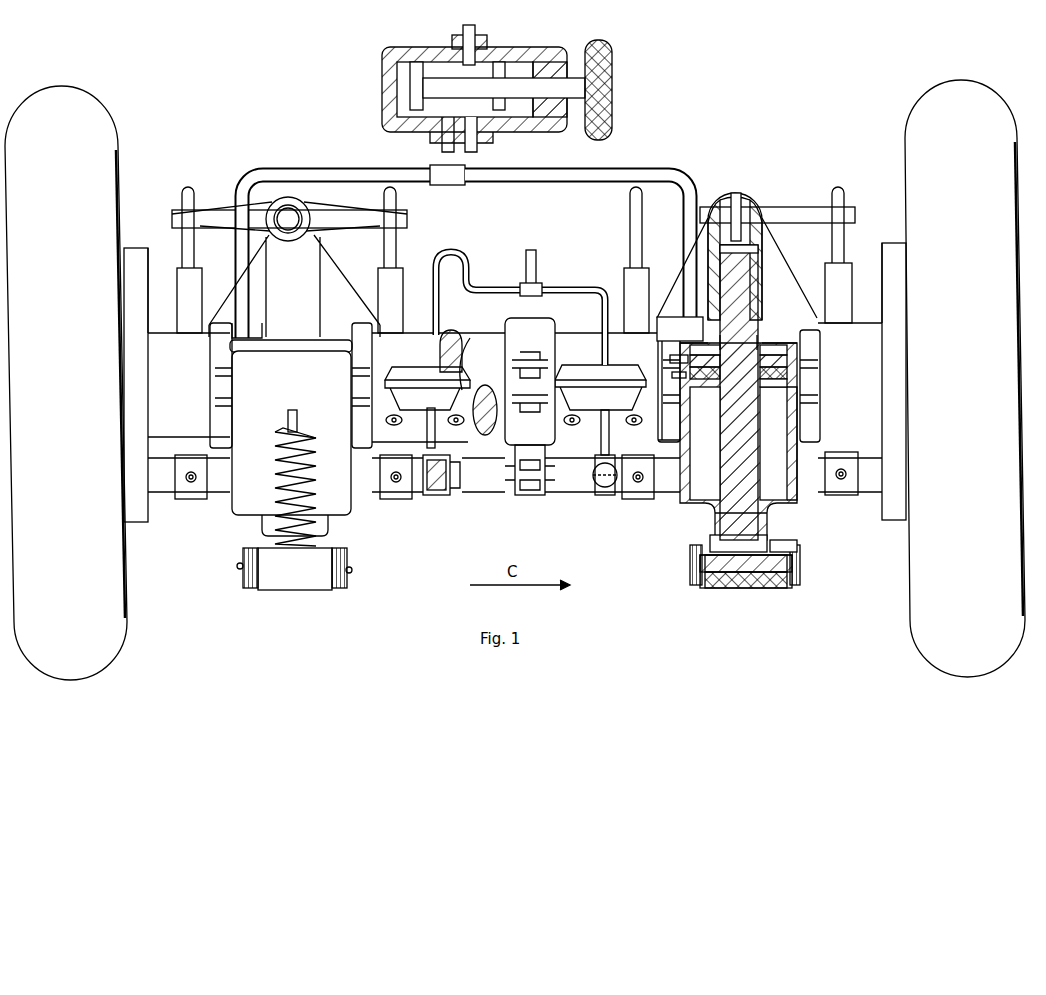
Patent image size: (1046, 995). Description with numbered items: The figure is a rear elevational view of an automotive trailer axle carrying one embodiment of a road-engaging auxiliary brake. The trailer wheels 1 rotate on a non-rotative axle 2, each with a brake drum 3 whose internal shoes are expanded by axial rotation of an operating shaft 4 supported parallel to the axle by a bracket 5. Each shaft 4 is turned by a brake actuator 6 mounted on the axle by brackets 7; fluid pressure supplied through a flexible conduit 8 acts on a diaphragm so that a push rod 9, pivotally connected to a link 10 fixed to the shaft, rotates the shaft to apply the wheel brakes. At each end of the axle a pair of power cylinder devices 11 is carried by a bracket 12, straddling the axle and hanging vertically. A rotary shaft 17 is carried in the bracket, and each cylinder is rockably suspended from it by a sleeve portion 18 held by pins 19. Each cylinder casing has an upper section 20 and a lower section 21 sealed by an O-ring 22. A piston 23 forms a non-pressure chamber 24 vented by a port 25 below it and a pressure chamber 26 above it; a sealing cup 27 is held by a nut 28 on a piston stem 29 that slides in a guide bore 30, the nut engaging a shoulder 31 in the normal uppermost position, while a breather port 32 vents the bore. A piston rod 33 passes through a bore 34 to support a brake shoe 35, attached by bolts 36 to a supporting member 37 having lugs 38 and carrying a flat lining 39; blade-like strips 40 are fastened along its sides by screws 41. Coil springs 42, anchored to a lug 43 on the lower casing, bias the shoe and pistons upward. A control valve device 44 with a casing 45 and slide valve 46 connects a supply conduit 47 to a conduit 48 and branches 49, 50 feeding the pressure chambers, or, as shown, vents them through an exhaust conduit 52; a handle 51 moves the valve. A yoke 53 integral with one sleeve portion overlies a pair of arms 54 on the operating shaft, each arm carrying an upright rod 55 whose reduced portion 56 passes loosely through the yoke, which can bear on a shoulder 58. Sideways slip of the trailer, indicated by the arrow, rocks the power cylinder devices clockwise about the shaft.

The trailer wheels 1 is at (115, 625).
The axle 2 is at (465, 344).
The brake drums 3 is at (135, 520).
The operating shafts 4 is at (364, 492).
The brackets 5 is at (533, 330).
The brake actuators 6 is at (421, 375).
The brackets 7 is at (396, 415).
The flexible conduit 8 is at (520, 306).
The push rod 9 is at (436, 438).
The link 10 is at (436, 495).
The power cylinder devices 11 is at (228, 516).
The bracket 12 is at (213, 416).
The rotary shaft 17 is at (282, 232).
The sleeve portion 18 is at (297, 235).
The pins 19 is at (736, 192).
The upper section 20 is at (294, 286).
The lower section 21 is at (242, 432).
The O-ring 22 is at (792, 352).
The piston 23 is at (780, 392).
The non-pressure chamber 24 is at (780, 490).
The port 25 is at (682, 502).
The pressure chamber 26 is at (790, 362).
The sealing cup 27 is at (790, 374).
The screw-threaded nut 28 is at (754, 332).
The piston stem 29 is at (748, 305).
The guide bore 30 is at (750, 275).
The shoulder 31 is at (792, 348).
The breather port 32 is at (762, 250).
The piston rod 33 is at (748, 438).
The bore 34 is at (770, 522).
The brake shoe 35 is at (350, 572).
The pins or bolts 36 is at (710, 540).
The supporting member 37 is at (772, 590).
The lugs 38 is at (796, 542).
The brake shoe lining 39 is at (315, 590).
The blade-like strips 40 is at (246, 584).
The screws 41 is at (238, 568).
The coil springs 42 is at (306, 487).
The lug 43 is at (297, 418).
The control valve device 44 is at (380, 80).
The casing 45 is at (498, 58).
The slide valve 46 is at (488, 100).
The conduit 47 is at (472, 38).
The conduit 48 is at (440, 152).
The branch 49 is at (332, 172).
The branch 50 is at (604, 172).
The handle 51 is at (605, 88).
The atmospheric exhaust conduit 52 is at (478, 152).
The yoke 53 is at (205, 218).
The arms 54 is at (191, 499).
The upright rod 55 is at (177, 294).
The reduced diameter portion 56 is at (181, 241).
The shoulder 58 is at (177, 272).